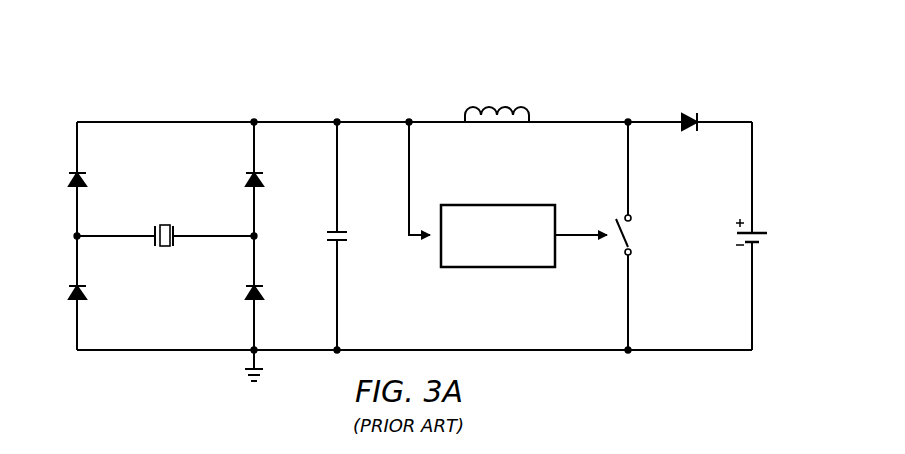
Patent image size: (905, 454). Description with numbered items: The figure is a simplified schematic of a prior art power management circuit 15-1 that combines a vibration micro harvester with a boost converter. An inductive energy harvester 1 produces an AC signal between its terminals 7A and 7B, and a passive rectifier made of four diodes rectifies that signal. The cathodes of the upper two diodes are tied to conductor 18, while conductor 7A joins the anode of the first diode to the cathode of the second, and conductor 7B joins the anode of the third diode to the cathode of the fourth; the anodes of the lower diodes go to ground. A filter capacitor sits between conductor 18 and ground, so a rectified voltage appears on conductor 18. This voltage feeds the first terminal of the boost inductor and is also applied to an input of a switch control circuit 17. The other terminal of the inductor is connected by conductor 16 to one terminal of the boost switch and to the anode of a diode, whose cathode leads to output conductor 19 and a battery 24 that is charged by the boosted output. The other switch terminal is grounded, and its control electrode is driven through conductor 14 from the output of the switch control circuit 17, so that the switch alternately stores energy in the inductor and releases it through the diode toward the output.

The power management circuit 15-1 is at (216, 67).
The conductor 18 is at (166, 121).
The conductor 7A is at (83, 232).
The conductor 7B is at (249, 241).
The inductive energy harvester 1 is at (163, 247).
The switch control circuit 17 is at (498, 267).
The conductor 14 is at (580, 237).
The conductor 16 is at (632, 126).
The output conductor 19 is at (732, 121).
The battery 24 is at (733, 238).